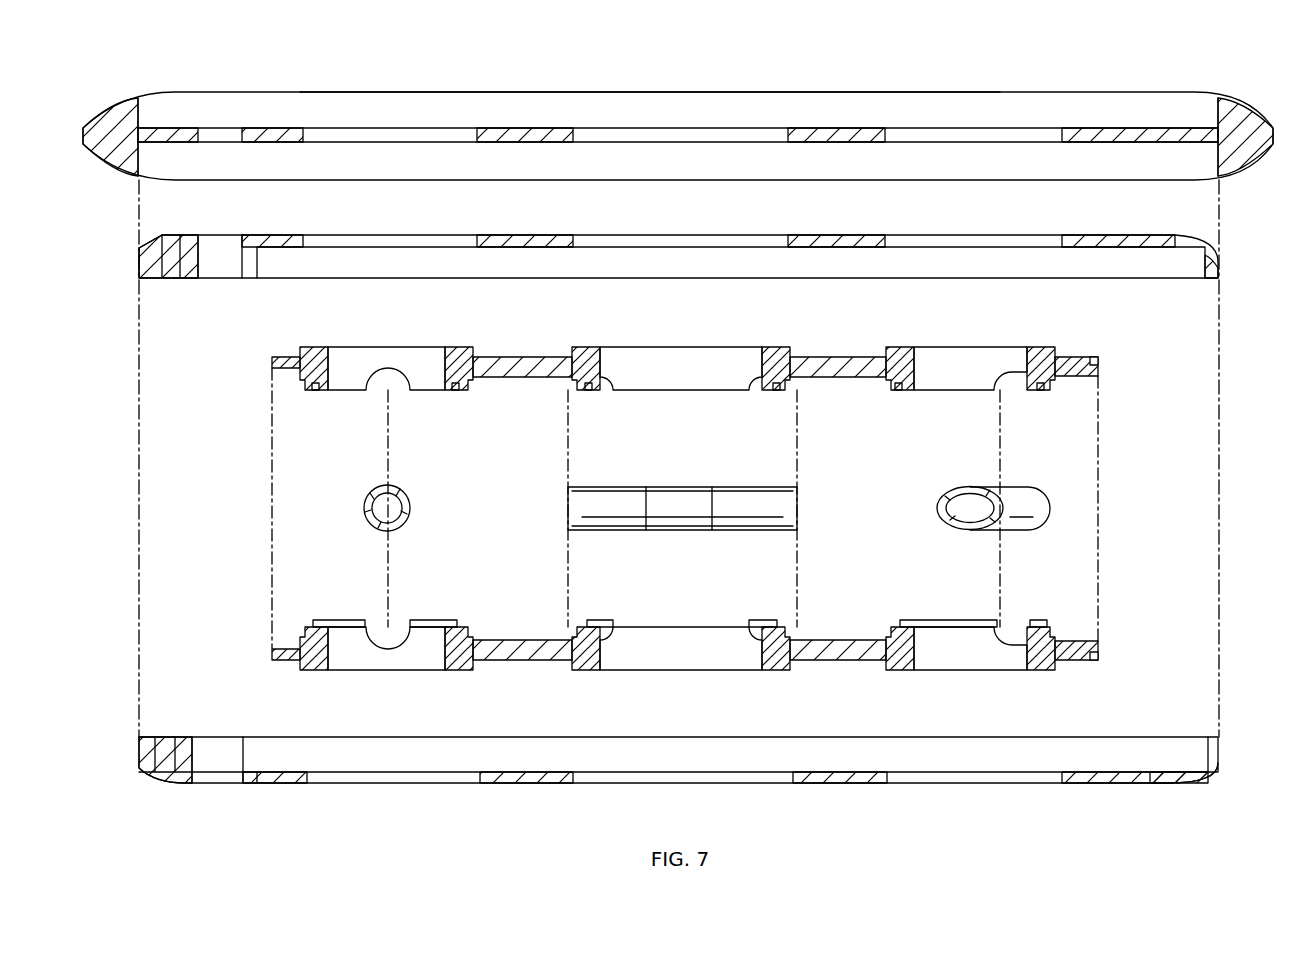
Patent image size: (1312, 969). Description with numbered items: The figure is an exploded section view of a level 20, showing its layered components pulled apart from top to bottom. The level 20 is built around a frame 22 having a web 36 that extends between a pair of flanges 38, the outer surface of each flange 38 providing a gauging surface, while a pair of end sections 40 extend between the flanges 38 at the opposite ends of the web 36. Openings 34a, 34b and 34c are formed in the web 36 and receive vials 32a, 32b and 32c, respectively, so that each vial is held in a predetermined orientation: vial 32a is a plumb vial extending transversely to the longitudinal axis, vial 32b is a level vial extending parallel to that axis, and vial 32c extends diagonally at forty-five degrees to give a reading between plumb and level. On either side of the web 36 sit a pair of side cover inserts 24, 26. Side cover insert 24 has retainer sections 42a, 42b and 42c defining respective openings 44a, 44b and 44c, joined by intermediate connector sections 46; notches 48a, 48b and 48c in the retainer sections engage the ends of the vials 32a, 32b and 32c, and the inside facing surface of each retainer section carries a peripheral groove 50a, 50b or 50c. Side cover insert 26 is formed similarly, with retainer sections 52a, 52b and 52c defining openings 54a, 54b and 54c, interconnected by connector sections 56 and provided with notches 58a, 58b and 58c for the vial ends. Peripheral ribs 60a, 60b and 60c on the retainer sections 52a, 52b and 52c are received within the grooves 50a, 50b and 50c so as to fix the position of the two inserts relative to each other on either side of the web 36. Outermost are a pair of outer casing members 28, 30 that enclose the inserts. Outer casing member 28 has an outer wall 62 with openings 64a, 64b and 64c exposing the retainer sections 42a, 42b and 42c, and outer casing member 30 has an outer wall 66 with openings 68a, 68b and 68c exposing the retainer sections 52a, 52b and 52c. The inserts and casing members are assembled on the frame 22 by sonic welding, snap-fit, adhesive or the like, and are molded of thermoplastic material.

The level 20 is at (1184, 80).
The frame 22 is at (689, 117).
The side cover insert 24 is at (698, 382).
The side cover insert 26 is at (698, 636).
The outer casing member 28 is at (701, 231).
The outer casing member 30 is at (688, 790).
The vial 32a is at (416, 488).
The vial 32b is at (675, 480).
The vial 32c is at (977, 480).
The opening 34a is at (477, 129).
The opening 34b is at (789, 129).
The opening 34c is at (1063, 129).
The web 36 is at (271, 128).
The flange 38 is at (600, 92).
The end section 40 is at (103, 115).
The retainer section 42a is at (314, 347).
The retainer section 42b is at (590, 347).
The retainer section 42c is at (1040, 347).
The opening 44a is at (445, 368).
The opening 44b is at (763, 367).
The opening 44c is at (914, 368).
The intermediate connector section 46 is at (511, 357).
The notch 48a is at (402, 386).
The notch 48b is at (608, 382).
The notch 48c is at (1010, 376).
The peripheral groove 50a is at (318, 392).
The peripheral groove 50b is at (588, 391).
The peripheral groove 50c is at (900, 391).
The retainer section 52a is at (318, 672).
The retainer section 52b is at (593, 672).
The retainer section 52c is at (900, 672).
The opening 54a is at (446, 650).
The opening 54b is at (767, 650).
The opening 54c is at (1036, 650).
The connector section 56 is at (531, 661).
The notch 58a is at (404, 620).
The notch 58b is at (609, 633).
The notch 58c is at (1014, 628).
The peripheral rib 60a is at (318, 620).
The peripheral rib 60b is at (596, 620).
The peripheral rib 60c is at (903, 620).
The outer wall 62 is at (270, 235).
The opening 64a is at (478, 235).
The opening 64b is at (790, 235).
The opening 64c is at (1062, 235).
The outer wall 66 is at (822, 785).
The opening 68a is at (310, 785).
The opening 68b is at (578, 785).
The opening 68c is at (889, 785).